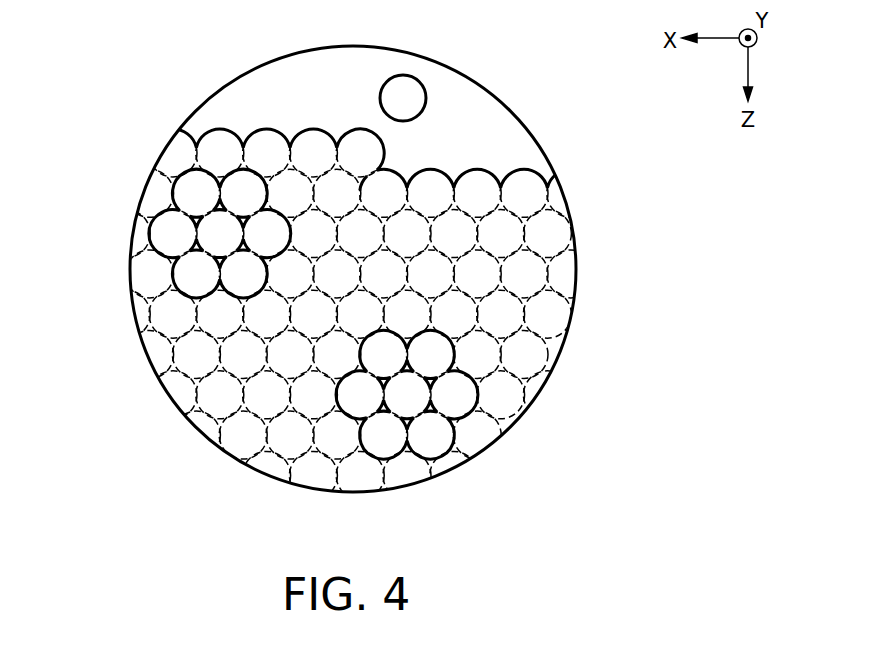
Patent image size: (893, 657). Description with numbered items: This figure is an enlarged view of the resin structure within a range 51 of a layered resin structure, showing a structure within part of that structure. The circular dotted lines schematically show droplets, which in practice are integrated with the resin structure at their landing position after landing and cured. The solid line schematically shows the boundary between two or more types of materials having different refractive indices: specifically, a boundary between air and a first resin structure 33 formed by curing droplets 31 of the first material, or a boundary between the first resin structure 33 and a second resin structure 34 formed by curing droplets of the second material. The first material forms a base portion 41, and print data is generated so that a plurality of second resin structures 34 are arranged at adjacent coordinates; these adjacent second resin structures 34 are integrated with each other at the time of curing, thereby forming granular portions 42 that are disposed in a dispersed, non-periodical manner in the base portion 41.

The droplets of the first material 31 is at (415, 78).
The first resin structure 33 is at (565, 275).
The second resin structure 34 is at (177, 237).
The base portion 41 is at (478, 170).
The granular portions 42 is at (178, 257).
The range 51 is at (346, 46).